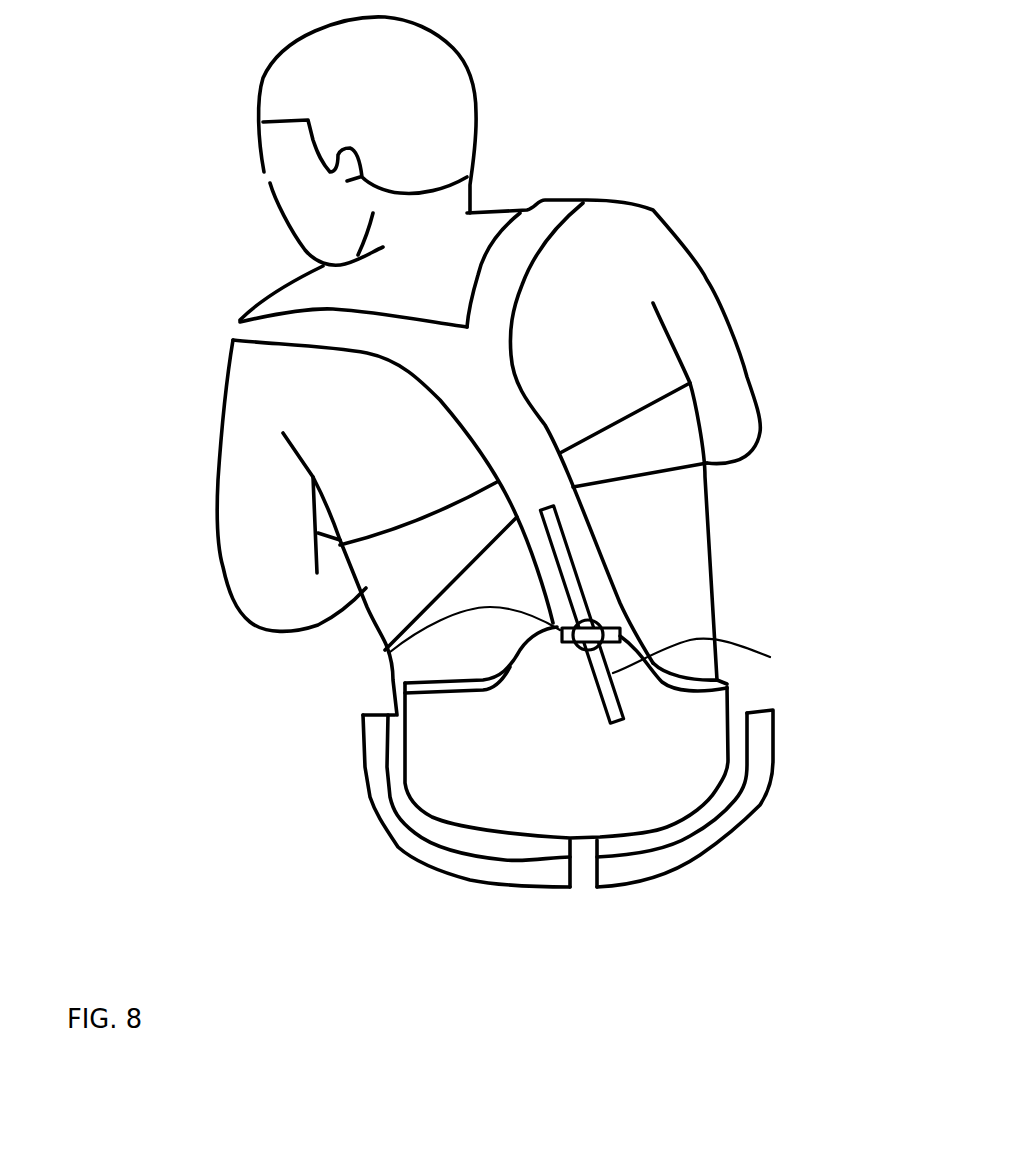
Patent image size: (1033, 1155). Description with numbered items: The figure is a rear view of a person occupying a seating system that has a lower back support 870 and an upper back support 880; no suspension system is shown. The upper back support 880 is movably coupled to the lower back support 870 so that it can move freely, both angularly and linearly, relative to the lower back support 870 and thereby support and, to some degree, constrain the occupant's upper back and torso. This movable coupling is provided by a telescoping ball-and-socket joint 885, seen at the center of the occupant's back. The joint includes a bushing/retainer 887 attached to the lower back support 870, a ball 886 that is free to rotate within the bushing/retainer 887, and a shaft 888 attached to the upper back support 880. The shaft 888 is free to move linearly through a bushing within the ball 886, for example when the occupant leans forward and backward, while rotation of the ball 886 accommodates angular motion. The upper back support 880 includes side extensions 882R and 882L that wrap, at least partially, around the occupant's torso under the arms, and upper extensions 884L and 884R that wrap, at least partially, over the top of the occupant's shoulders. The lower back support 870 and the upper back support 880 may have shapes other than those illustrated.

The upper back support 880 is at (175, 404).
The left upper extension 884L is at (240, 323).
The right upper extension 884R is at (575, 197).
The left side extension 882L is at (367, 610).
The right side extension 882R is at (693, 393).
The telescoping ball-and-socket joint 885 is at (662, 608).
The bushing/retainer 887 is at (600, 620).
The ball 886 is at (390, 652).
The shaft 888 is at (770, 657).
The lower back support 870 is at (700, 800).